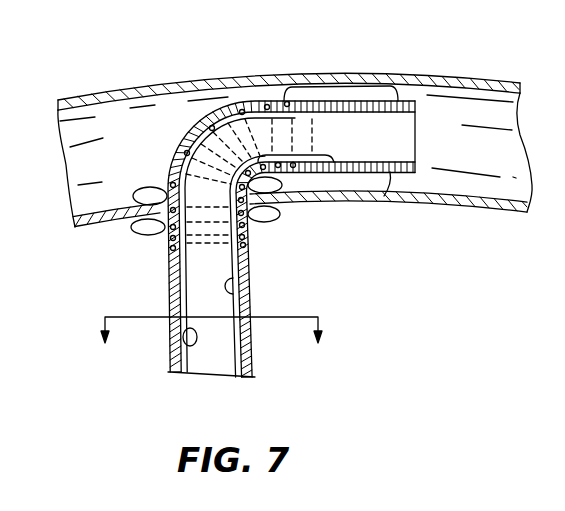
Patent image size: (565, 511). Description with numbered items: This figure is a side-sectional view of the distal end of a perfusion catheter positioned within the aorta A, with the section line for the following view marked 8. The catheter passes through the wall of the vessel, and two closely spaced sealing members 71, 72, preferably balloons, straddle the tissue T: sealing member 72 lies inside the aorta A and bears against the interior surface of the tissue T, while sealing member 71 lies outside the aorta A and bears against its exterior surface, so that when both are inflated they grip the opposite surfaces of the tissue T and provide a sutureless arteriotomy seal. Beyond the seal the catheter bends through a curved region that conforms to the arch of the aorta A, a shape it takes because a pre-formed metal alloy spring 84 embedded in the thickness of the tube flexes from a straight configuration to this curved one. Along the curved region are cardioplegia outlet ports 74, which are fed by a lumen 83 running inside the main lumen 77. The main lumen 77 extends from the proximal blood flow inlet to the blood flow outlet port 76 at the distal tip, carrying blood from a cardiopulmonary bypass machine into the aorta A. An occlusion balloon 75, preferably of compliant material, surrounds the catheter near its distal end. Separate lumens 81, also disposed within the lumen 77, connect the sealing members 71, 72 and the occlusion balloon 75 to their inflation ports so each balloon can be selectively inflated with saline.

The aorta A is at (478, 78).
The sealing member 71 is at (140, 230).
The sealing member 72 is at (155, 190).
The cardioplegia outlet ports 74 is at (195, 140).
The occlusion balloon 75 is at (336, 96).
The blood flow outlet port 76 is at (403, 138).
The lumen 77 is at (218, 367).
The lumens 81 is at (233, 280).
The lumen 83 is at (185, 340).
The pre-formed metal alloy spring 84 is at (185, 150).
The tissue T is at (293, 175).
The section line 8- 8 is at (211, 345).